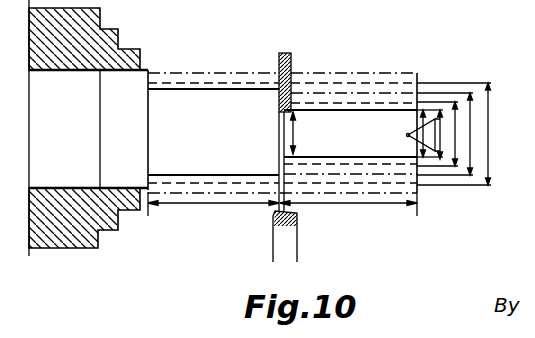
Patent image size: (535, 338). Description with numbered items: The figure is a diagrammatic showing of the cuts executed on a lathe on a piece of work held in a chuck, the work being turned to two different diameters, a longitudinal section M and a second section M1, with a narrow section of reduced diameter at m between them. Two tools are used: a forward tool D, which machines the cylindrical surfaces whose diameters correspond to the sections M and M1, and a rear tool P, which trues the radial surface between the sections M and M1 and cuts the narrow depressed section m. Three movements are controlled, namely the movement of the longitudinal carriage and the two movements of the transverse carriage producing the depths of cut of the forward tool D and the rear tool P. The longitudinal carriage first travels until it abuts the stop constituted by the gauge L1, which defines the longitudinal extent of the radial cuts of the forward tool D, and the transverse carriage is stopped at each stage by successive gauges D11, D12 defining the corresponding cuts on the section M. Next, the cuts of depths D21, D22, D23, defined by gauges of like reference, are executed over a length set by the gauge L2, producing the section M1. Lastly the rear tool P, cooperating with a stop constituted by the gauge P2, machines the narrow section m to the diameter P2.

The longitudinal section M is at (198, 98).
The second section of reduced diameter M1 is at (345, 115).
The rear tool P is at (292, 70).
The narrow section of reduced diameter m is at (278, 128).
The gauge defining diameter of section m P2 is at (302, 133).
The forward tool D is at (292, 235).
The gauge defining longitudinal extent of first cuts L1 is at (213, 210).
The gauge defining longitudinal displacement for second cuts L2 is at (348, 210).
The gauge defining first depth of cut on section M1 D21 is at (455, 146).
The gauge defining second depth of cut on section M1 D22 is at (453, 133).
The gauge defining third depth of cut on section M1 D23 is at (438, 119).
The gauge defining second depth of cut on section M D12 is at (472, 162).
The gauge defining first depth of cut on section M D11 is at (487, 177).